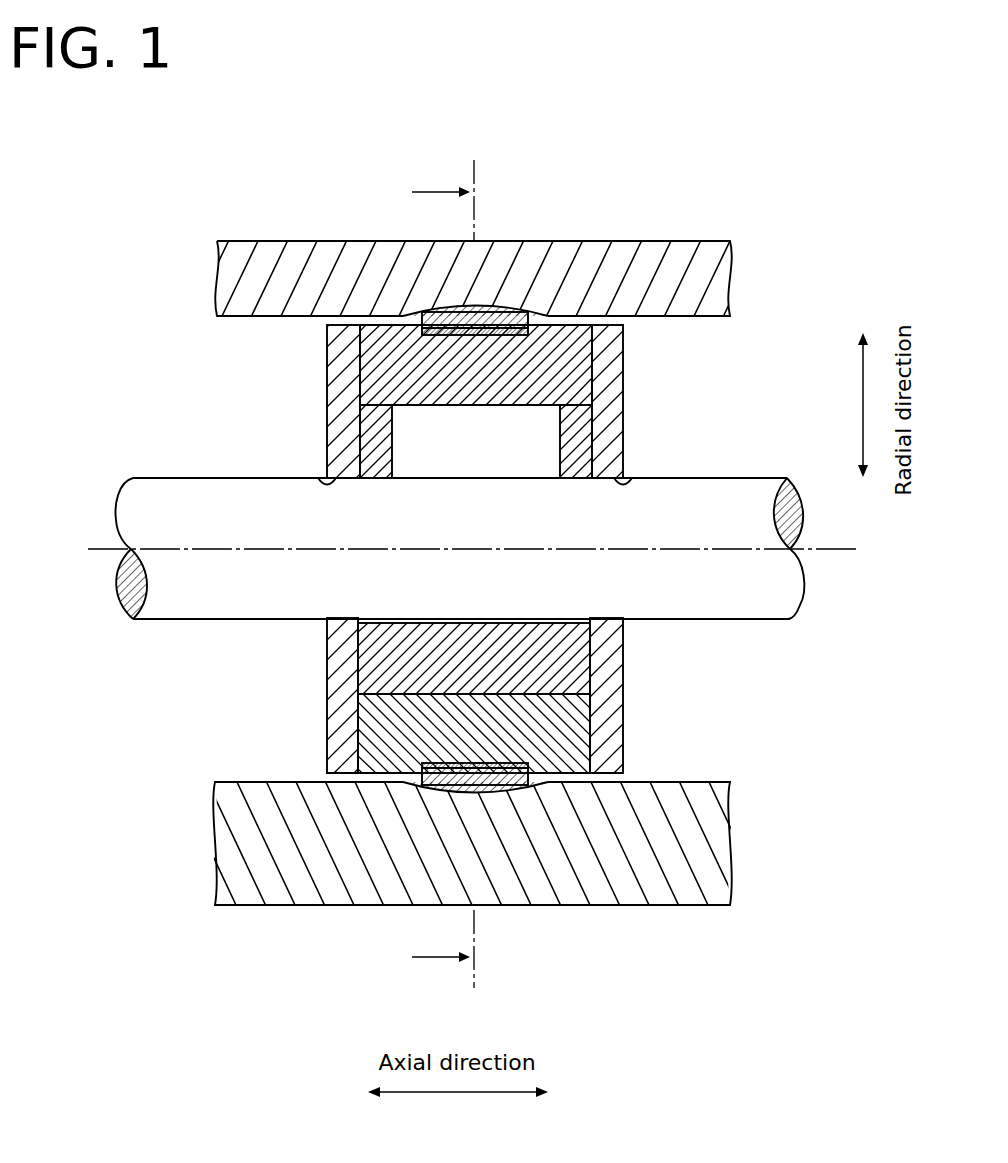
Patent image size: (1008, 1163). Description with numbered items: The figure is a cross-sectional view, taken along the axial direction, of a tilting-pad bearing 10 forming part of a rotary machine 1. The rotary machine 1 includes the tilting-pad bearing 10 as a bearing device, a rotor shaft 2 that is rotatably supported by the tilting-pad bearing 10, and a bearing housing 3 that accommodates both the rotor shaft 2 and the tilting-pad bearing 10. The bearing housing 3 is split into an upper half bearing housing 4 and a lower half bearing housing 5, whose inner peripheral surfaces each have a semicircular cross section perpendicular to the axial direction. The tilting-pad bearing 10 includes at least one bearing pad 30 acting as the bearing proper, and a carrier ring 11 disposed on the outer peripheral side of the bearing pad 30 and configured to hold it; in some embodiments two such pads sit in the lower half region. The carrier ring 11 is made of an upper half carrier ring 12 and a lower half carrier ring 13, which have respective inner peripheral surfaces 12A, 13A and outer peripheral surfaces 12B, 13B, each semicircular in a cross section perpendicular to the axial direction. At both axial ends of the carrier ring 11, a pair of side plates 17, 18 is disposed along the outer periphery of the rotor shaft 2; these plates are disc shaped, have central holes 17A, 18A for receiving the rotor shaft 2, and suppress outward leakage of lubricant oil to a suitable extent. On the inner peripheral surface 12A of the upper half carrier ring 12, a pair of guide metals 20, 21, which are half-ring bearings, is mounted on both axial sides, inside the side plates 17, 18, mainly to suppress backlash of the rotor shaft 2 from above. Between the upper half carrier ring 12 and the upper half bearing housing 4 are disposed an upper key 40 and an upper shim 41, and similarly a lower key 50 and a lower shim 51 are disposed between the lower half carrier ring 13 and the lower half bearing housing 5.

The rotary machine 1 is at (690, 122).
The rotor shaft 2 is at (460, 518).
The bearing housing 3 is at (480, 239).
The upper half bearing housing 4 is at (688, 246).
The lower half bearing housing 5 is at (694, 900).
The tilting-pad bearing 10 is at (520, 563).
The carrier ring 11 is at (470, 325).
The upper half carrier ring 12 is at (411, 391).
The inner peripheral surface of upper half carrier ring 12A is at (413, 406).
The outer peripheral surface of upper half carrier ring 12B is at (411, 329).
The lower half carrier ring 13 is at (461, 701).
The inner peripheral surface of lower half carrier ring 13A is at (392, 694).
The outer peripheral surface of lower half carrier ring 13B is at (392, 733).
The side plate 17 is at (337, 432).
The hole 17A is at (322, 480).
The side plate 18 is at (614, 410).
The hole 18A is at (628, 480).
The guide metal 20 is at (387, 442).
The guide metal 21 is at (562, 445).
The bearing pad 30 is at (560, 662).
The upper key 40 is at (490, 331).
The upper shim 41 is at (513, 322).
The lower key 50 is at (502, 770).
The lower shim 51 is at (490, 790).